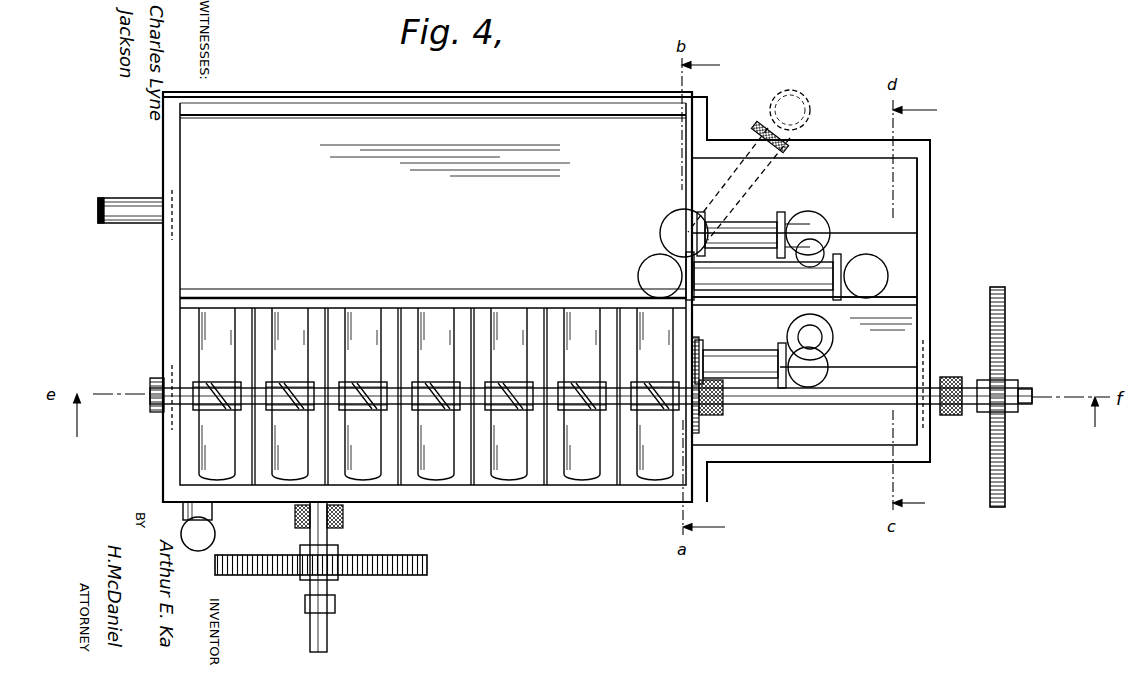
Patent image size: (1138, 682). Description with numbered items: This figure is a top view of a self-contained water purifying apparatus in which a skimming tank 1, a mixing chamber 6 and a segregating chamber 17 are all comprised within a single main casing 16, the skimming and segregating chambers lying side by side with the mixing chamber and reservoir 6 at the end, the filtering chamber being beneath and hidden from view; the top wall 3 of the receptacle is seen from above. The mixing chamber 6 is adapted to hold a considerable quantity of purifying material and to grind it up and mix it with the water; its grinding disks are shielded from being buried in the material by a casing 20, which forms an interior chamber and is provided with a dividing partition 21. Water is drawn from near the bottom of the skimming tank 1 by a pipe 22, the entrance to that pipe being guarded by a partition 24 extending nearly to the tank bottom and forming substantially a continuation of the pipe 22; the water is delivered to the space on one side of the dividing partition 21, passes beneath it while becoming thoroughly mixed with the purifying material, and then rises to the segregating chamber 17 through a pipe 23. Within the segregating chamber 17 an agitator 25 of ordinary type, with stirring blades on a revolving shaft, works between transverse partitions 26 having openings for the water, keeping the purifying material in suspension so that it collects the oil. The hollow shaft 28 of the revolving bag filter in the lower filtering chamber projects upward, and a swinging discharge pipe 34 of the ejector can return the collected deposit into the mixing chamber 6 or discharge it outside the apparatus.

The skimming tank 1 is at (435, 297).
The top wall of receptacle 3 is at (433, 115).
The mixing chamber 6 is at (830, 430).
The main casing 16 is at (170, 308).
The segregating chamber 17 is at (429, 394).
The casing 20 is at (900, 301).
The dividing partition 21 is at (905, 304).
The pipe 22 is at (128, 226).
The pipe 23 is at (743, 358).
The partition 24 is at (670, 233).
The agitator 25 is at (515, 517).
The transverse partitions 26 is at (400, 470).
The hollow shaft 28 is at (197, 537).
The discharge pipe 34 is at (757, 280).